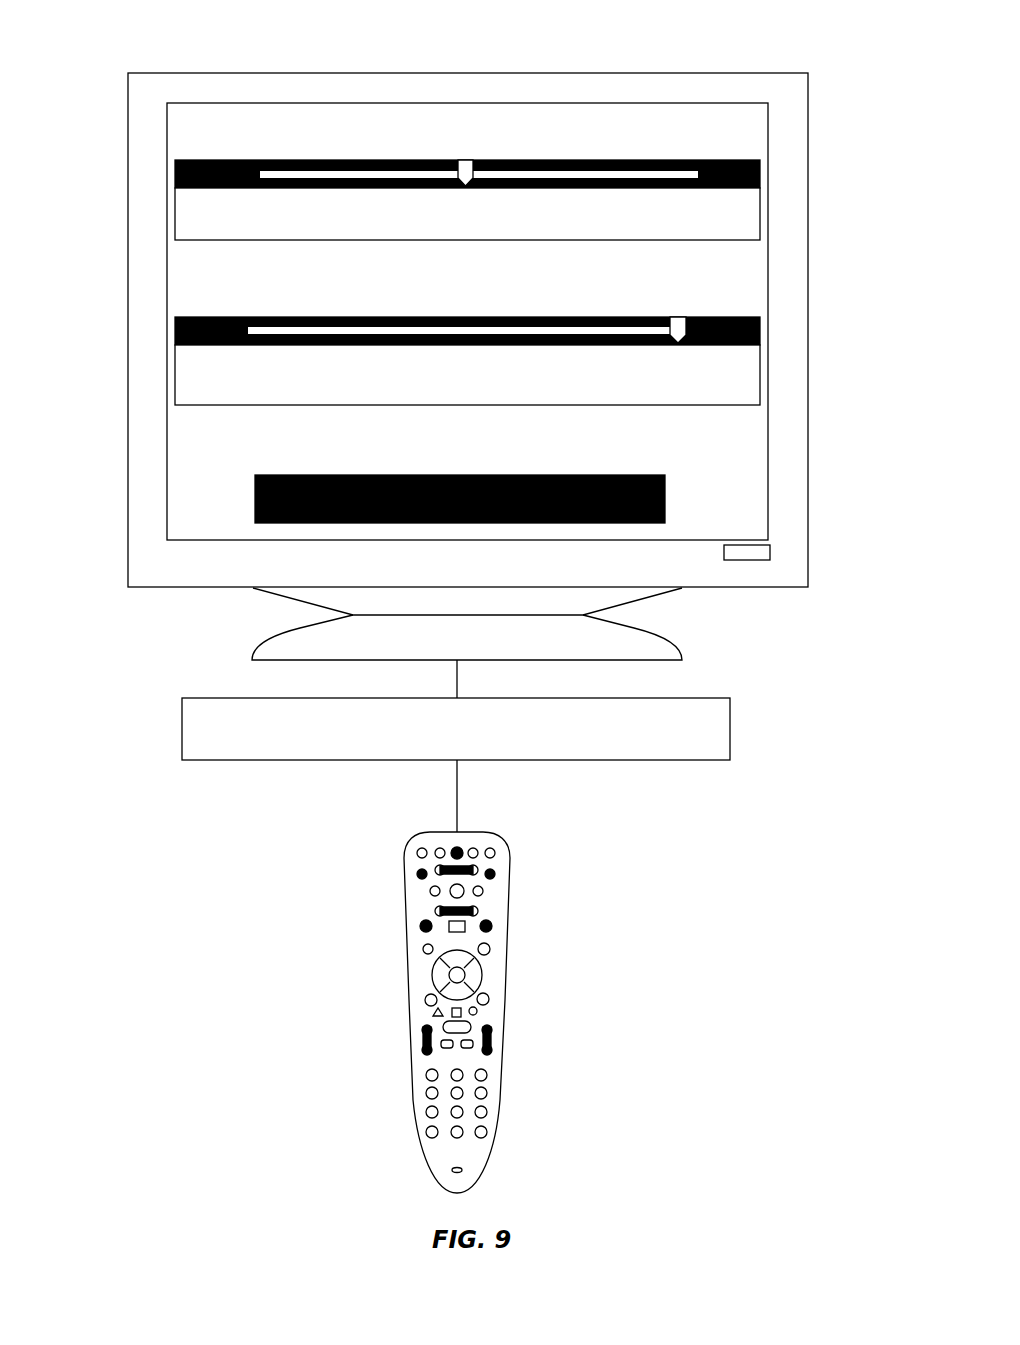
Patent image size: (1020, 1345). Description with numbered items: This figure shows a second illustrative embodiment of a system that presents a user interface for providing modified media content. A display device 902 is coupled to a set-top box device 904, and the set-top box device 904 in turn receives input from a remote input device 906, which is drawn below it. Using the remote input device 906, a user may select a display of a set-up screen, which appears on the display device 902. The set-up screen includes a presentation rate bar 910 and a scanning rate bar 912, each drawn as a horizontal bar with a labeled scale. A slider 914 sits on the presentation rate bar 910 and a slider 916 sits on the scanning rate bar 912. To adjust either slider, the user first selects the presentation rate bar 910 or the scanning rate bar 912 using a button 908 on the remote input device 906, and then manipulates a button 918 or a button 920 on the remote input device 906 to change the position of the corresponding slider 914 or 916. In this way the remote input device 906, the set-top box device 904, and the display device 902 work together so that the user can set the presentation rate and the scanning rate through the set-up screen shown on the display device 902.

The display device 902 is at (195, 72).
The set-top box device 904 is at (183, 728).
The remote input device 906 is at (405, 880).
The button 908 is at (430, 999).
The presentation rate bar 910 is at (174, 178).
The scanning rate bar 912 is at (174, 334).
The slider 914 is at (462, 158).
The slider 916 is at (680, 316).
The button 918 is at (425, 1032).
The button 920 is at (489, 1032).